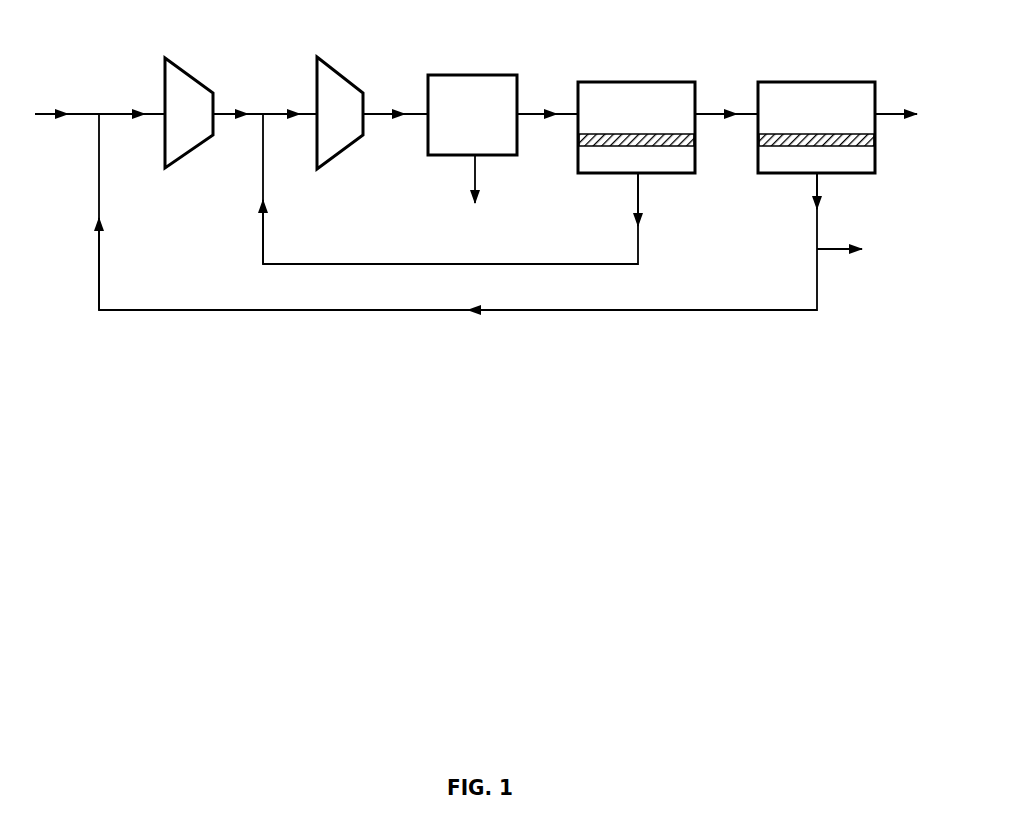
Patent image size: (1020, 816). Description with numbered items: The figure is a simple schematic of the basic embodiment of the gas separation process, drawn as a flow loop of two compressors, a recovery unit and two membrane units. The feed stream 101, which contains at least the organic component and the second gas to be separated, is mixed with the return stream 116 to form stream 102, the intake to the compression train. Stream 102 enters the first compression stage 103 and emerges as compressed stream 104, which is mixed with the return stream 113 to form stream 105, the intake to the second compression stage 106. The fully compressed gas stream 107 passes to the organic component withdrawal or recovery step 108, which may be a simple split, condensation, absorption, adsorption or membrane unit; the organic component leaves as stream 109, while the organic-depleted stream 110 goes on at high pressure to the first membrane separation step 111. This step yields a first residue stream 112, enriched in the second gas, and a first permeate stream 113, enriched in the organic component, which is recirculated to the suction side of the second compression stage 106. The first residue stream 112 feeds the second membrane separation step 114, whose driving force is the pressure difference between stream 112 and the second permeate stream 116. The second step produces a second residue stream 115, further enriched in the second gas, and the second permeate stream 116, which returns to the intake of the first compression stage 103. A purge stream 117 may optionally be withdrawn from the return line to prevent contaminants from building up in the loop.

The feed stream 101 is at (67, 98).
The intake stream to compression train 102 is at (132, 131).
The first compression stage 103 is at (173, 61).
The compressed stream 104 is at (238, 98).
The intake stream to second compression stage 105 is at (290, 131).
The second compression stage 106 is at (328, 63).
The fully compressed gas stream 107 is at (395, 130).
The organic component withdrawal or recovery step 108 is at (490, 75).
The withdrawn organic component stream 109 is at (475, 194).
The membrane feed stream 110 is at (547, 130).
The first membrane separation step 111 is at (653, 82).
The first residue stream 112 is at (726, 128).
The first permeate stream 113 is at (477, 189).
The second membrane separation step 114 is at (832, 82).
The second residue stream 115 is at (903, 128).
The second permeate stream 116 is at (480, 212).
The purge stream 117 is at (839, 266).